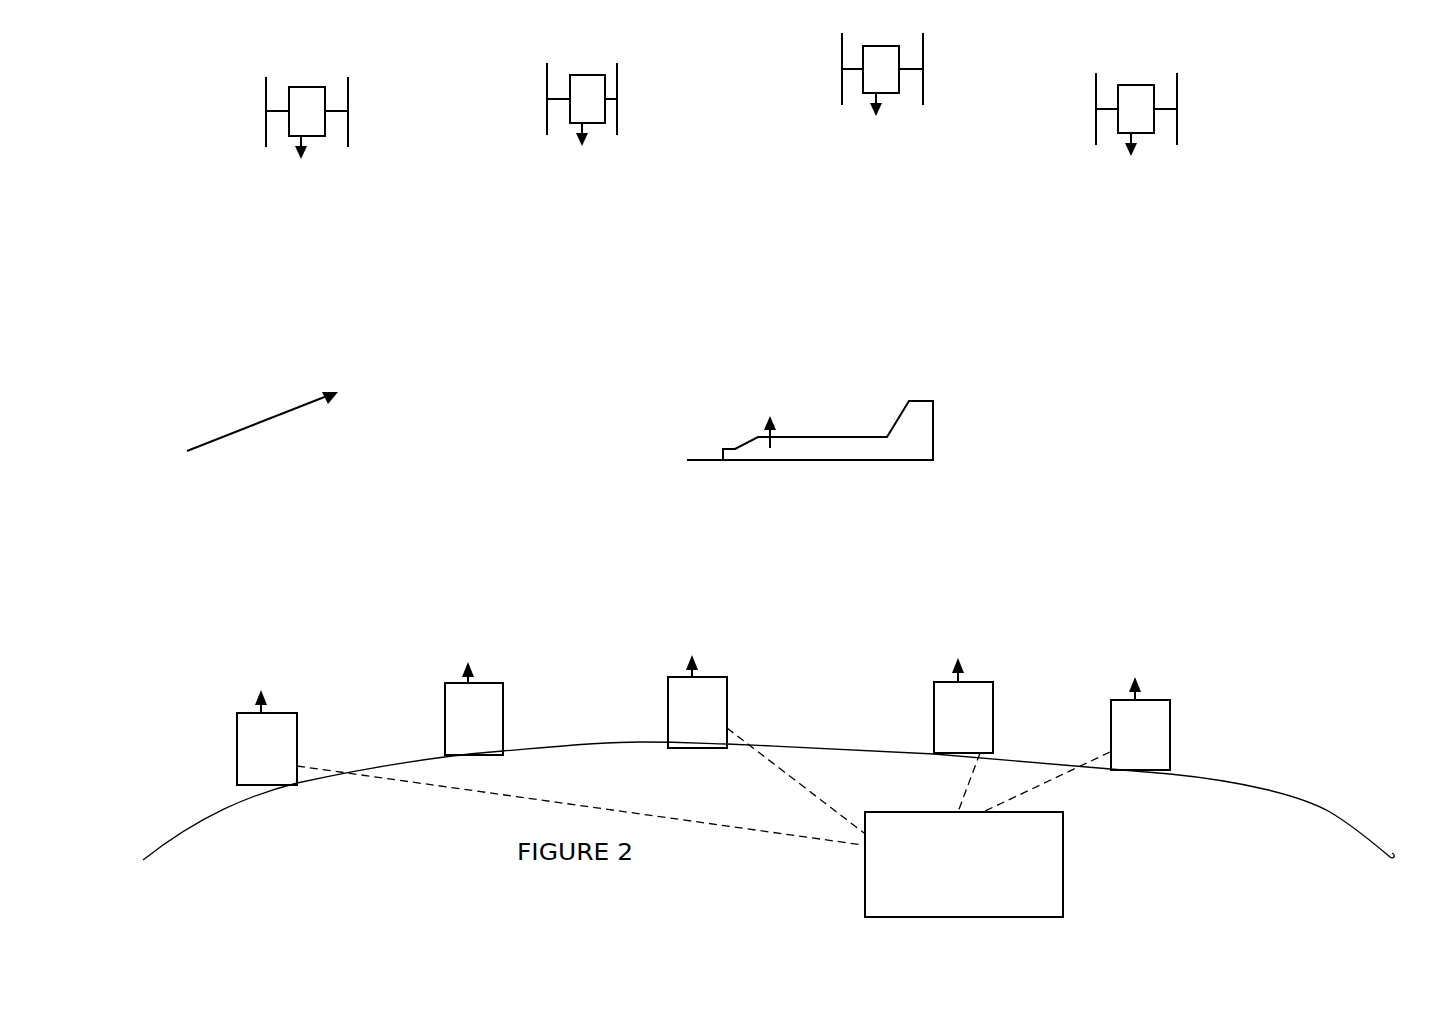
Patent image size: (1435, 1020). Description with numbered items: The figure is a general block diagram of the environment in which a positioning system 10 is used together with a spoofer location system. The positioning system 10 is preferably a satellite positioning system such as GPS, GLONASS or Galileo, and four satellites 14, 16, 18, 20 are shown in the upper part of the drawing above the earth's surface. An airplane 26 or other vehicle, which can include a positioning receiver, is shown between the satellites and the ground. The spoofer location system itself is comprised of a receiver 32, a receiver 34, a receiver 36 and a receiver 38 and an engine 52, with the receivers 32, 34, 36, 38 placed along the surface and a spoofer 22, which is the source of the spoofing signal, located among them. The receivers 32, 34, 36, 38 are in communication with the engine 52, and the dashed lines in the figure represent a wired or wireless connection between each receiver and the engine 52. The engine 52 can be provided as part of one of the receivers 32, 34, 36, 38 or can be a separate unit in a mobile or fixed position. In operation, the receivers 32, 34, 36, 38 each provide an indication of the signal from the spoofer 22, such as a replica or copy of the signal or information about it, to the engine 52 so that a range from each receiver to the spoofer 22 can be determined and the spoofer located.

The positioning system 10 is at (238, 441).
The satellite 14 is at (313, 136).
The satellite 16 is at (594, 123).
The satellite 18 is at (888, 93).
The satellite 20 is at (1143, 133).
The spoofer 22 is at (503, 717).
The airplane 26 is at (933, 435).
The receiver 32 is at (993, 712).
The receiver 34 is at (727, 710).
The receiver 36 is at (297, 748).
The receiver 38 is at (1170, 733).
The engine 52 is at (1063, 832).